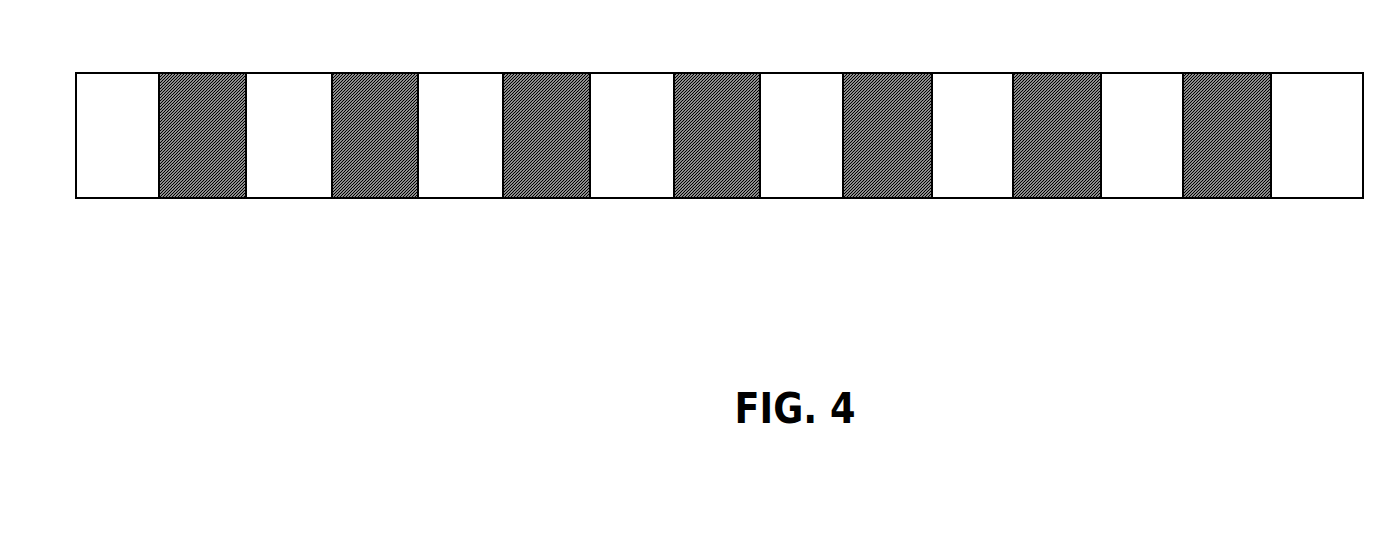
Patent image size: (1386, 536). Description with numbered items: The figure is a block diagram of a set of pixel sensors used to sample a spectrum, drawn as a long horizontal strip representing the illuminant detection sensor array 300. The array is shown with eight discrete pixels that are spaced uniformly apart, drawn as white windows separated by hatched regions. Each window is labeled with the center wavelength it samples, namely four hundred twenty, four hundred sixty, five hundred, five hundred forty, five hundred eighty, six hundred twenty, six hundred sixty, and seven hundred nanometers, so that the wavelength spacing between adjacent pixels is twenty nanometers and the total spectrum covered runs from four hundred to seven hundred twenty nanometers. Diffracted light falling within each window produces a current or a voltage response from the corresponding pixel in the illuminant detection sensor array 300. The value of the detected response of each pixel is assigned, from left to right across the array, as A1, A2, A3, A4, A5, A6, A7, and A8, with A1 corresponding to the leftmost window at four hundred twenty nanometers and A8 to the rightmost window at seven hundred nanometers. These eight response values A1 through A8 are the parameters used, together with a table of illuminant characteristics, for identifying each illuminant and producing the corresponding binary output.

The illuminant detection sensor array 300 is at (719, 173).
The detected response value of first pixel A1 is at (117, 119).
The detected response value of second pixel A2 is at (289, 119).
The detected response value of third pixel A3 is at (460, 119).
The detected response value of fourth pixel A4 is at (632, 119).
The detected response value of fifth pixel A5 is at (801, 119).
The detected response value of sixth pixel A6 is at (972, 119).
The detected response value of seventh pixel A7 is at (1142, 119).
The detected response value of eighth pixel A8 is at (1317, 119).